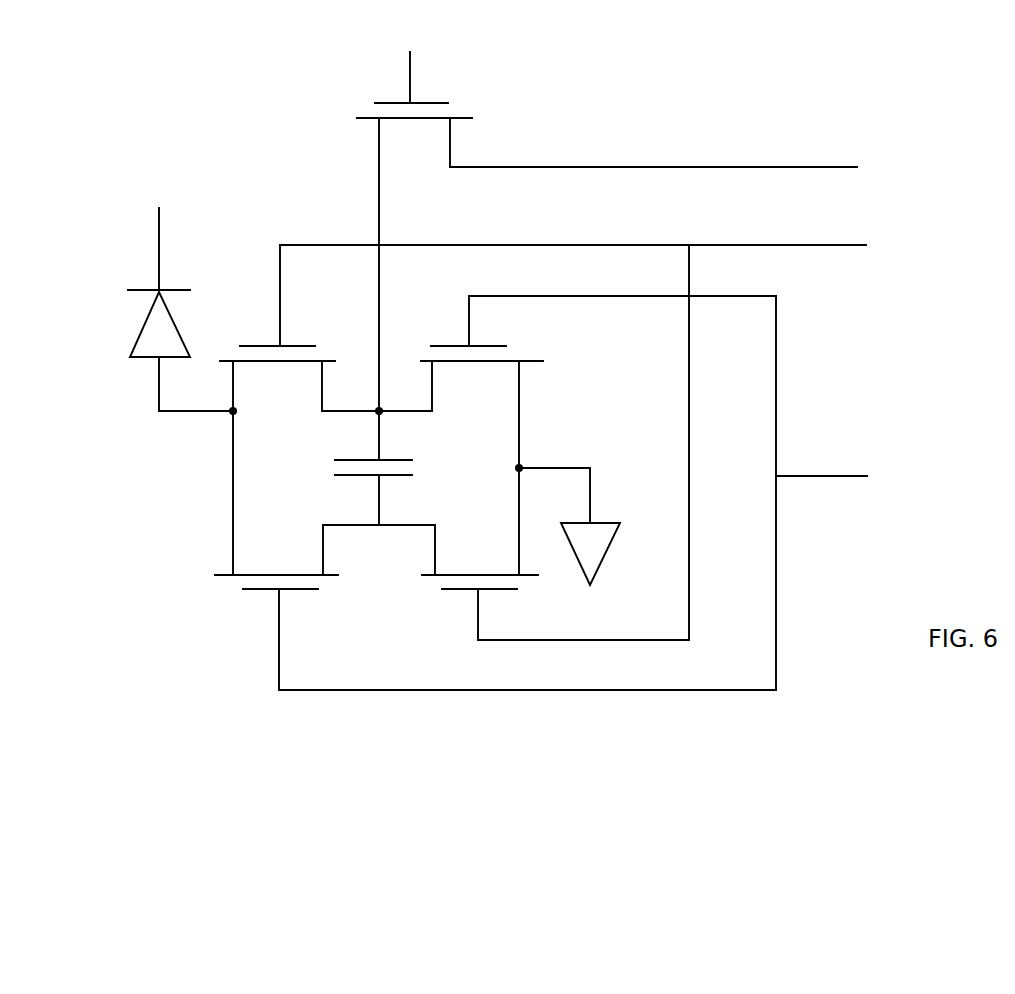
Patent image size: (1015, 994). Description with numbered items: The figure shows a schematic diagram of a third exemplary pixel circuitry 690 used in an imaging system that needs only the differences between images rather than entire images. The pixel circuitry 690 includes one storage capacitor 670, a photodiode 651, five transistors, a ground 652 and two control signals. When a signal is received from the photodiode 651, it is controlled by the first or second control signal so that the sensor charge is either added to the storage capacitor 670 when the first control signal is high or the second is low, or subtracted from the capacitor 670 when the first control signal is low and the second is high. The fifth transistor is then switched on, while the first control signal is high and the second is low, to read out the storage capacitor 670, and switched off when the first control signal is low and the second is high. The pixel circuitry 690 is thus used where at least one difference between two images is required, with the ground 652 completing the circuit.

The pixel circuitry 690 is at (708, 54).
The photodiode 651 is at (150, 337).
The ground 652 is at (586, 550).
The capacitor 670 is at (352, 477).